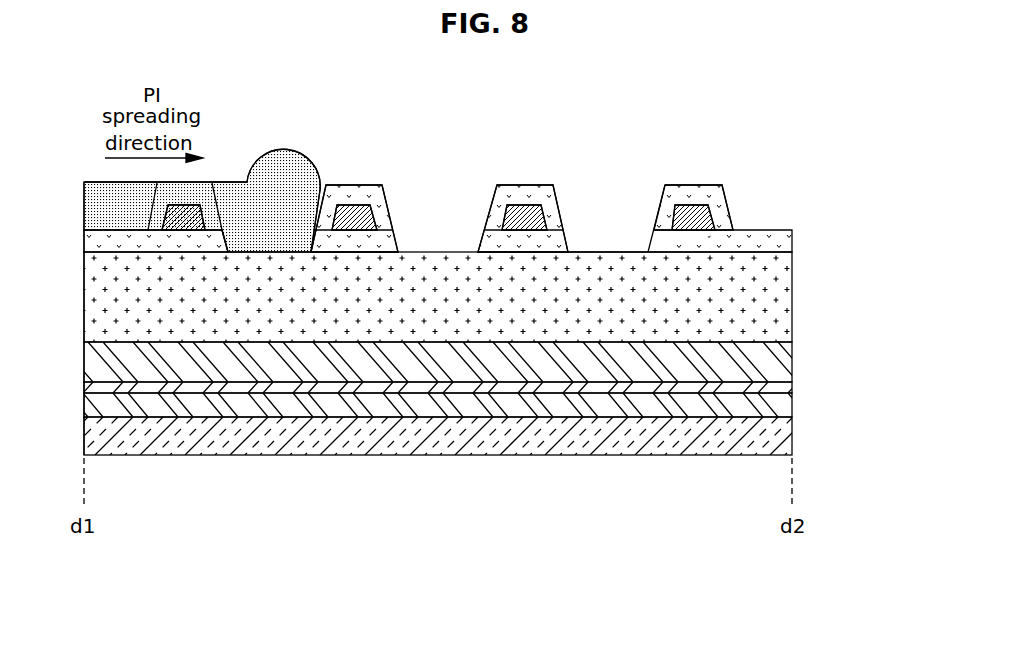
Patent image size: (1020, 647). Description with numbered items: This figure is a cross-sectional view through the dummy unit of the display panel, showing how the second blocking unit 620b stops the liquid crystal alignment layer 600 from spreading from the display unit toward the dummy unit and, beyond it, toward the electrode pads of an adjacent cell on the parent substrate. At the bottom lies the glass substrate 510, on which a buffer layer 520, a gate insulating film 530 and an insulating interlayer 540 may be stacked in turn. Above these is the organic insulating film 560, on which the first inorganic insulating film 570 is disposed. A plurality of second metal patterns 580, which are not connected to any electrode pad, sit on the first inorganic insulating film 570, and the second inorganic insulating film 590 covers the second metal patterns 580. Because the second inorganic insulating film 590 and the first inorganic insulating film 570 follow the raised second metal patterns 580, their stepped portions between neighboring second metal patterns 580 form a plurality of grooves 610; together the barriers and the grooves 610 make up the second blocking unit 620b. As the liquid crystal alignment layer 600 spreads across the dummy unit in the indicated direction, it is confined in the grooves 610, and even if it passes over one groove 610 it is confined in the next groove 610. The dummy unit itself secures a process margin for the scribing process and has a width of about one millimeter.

The glass substrate 510 is at (783, 438).
The buffer layer 520 is at (785, 402).
The gate insulating film 530 is at (785, 388).
The insulating interlayer 540 is at (783, 363).
The organic insulating film 560 is at (785, 298).
The first inorganic insulating film 570 is at (783, 242).
The second metal patterns 580 is at (690, 222).
The second inorganic insulating film 590 is at (715, 195).
The liquid crystal alignment layer 600 is at (272, 200).
The grooves 610 is at (608, 179).
The second blocking unit 620b is at (665, 156).